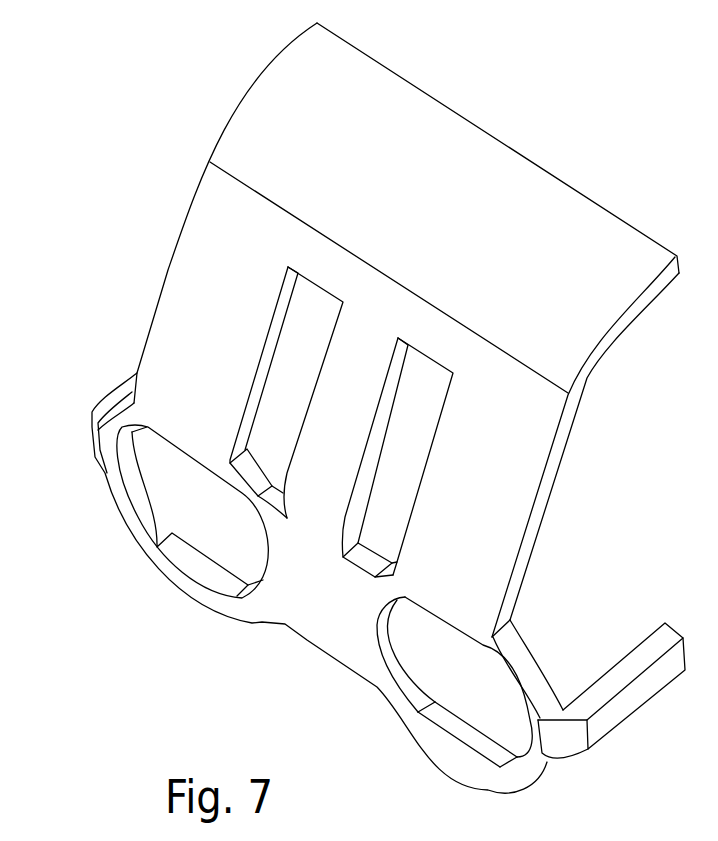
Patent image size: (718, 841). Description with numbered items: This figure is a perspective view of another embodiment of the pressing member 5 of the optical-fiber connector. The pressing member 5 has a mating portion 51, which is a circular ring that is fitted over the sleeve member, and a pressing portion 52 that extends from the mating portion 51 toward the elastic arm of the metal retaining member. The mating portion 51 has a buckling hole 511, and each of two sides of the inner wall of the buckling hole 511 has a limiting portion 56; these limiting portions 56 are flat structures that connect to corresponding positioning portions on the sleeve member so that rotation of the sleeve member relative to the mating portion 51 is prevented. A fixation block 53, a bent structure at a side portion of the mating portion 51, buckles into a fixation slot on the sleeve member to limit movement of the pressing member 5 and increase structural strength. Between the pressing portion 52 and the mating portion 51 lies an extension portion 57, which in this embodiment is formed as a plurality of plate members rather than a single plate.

The pressing member 5 is at (108, 481).
The mating portion 51 is at (192, 587).
The buckling hole 511 is at (140, 510).
The pressing portion 52 is at (267, 90).
The fixation block 53 is at (643, 695).
The limiting portion 56 is at (448, 625).
The extension portion 57 is at (345, 378).